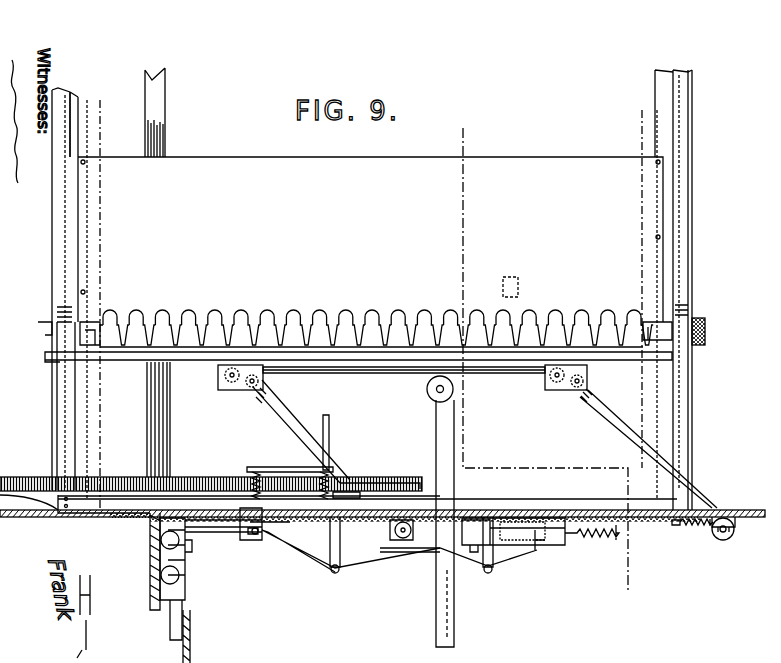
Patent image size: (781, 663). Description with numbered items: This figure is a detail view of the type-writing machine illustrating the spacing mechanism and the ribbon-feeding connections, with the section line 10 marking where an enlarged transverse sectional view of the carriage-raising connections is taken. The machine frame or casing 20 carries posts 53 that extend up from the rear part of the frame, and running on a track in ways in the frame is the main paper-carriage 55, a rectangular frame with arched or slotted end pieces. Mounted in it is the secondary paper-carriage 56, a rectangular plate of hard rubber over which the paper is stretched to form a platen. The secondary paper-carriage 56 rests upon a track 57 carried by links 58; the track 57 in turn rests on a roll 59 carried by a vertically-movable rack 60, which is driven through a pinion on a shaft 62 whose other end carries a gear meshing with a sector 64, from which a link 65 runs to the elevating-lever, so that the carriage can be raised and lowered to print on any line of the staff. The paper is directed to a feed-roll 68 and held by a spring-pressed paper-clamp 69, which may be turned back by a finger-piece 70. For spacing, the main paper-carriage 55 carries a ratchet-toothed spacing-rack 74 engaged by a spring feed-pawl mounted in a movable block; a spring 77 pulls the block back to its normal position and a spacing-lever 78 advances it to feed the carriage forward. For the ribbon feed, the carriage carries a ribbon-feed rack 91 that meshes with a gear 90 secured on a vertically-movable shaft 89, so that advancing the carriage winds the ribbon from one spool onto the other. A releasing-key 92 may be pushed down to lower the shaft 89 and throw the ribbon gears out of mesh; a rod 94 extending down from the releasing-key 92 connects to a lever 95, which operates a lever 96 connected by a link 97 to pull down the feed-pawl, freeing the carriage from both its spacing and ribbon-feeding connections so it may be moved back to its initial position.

The section line 10 is at (463, 136).
The machine frame or casing 20 is at (763, 515).
The posts 53 is at (158, 105).
The main paper-carriage 55 is at (66, 418).
The secondary paper-carriage 56 is at (78, 108).
The track 57 is at (342, 368).
The links 58 is at (292, 415).
The roll 59 is at (453, 387).
The vertically-movable rack 60 is at (437, 443).
The shaft 62 is at (240, 540).
The sector 64 is at (174, 625).
The link 65 is at (190, 650).
The feed-roll 68 is at (152, 326).
The spring-pressed paper-clamp 69 is at (243, 330).
The finger-piece 70 is at (50, 323).
The ratchet-toothed spacing-rack 74 is at (136, 522).
The spring 77 is at (600, 538).
The spacing-lever 78 is at (520, 546).
The vertically-movable shaft 89 is at (329, 428).
The gear 90 is at (348, 480).
The ribbon-feed rack 91 is at (101, 484).
The releasing-key 92 is at (285, 477).
The rod 94 is at (259, 527).
The lever 95 is at (312, 568).
The lever 96 is at (474, 570).
The link 97 is at (538, 547).